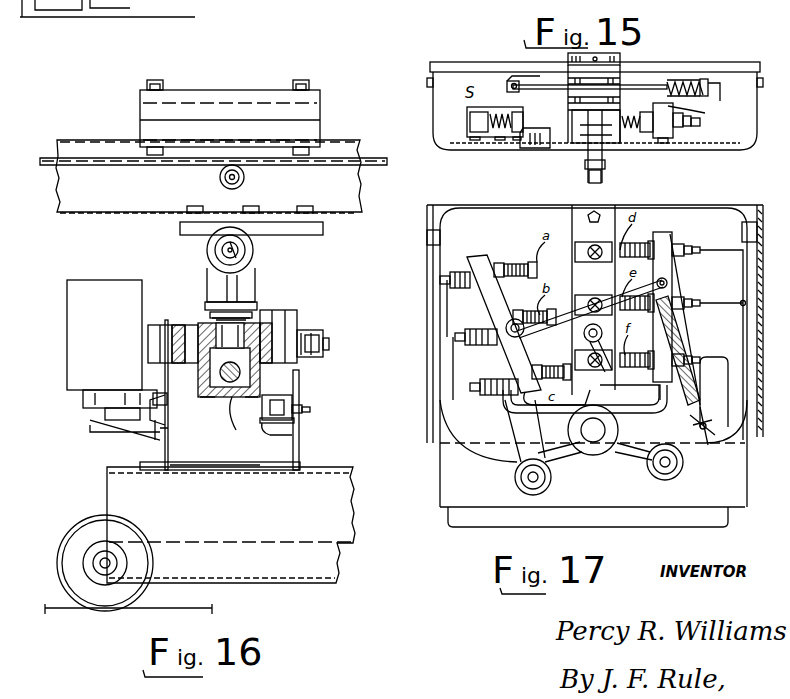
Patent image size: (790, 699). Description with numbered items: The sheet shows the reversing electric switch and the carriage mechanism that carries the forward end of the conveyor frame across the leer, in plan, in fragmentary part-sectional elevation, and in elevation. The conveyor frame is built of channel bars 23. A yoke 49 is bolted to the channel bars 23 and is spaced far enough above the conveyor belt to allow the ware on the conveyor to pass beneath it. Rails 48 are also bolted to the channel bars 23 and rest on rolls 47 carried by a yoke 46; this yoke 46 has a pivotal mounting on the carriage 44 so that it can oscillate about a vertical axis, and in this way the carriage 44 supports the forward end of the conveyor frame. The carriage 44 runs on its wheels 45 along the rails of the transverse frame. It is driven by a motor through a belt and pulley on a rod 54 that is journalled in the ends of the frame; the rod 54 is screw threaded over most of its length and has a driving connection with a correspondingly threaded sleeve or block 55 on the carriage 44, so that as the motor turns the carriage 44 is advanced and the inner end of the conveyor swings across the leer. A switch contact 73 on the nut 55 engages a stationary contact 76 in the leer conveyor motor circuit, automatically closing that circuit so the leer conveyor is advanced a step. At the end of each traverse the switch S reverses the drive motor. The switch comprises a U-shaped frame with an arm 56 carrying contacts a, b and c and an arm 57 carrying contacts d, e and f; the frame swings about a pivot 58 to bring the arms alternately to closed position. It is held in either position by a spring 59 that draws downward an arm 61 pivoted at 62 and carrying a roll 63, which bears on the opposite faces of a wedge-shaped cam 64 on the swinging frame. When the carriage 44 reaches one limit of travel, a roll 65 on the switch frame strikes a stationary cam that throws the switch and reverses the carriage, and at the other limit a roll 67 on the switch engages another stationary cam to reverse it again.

In FIG. 16, the channel bars 23 is at (336, 157).
In FIG. 16, the yoke 49 is at (247, 112).
In FIG. 16, the rails 48 is at (303, 232).
In FIG. 16, the rolls 47 is at (207, 247).
In FIG. 16, the yoke 46 is at (243, 283).
In FIG. 16, the carriage 44 is at (180, 323).
In FIG. 16, the wheels 45 is at (300, 332).
In FIG. 16, the rod 54 is at (217, 395).
In FIG. 16, the threaded sleeve or block 55 is at (234, 410).
In FIG. 16, the switch contact 73 is at (300, 410).
In FIG. 16, the stationary contact 76 is at (277, 427).
In FIG. 15, the arm 56 is at (475, 127).
In FIG. 17, the arm 56 is at (480, 262).
In FIG. 15, the arm 57 is at (667, 127).
In FIG. 17, the arm 57 is at (667, 233).
In FIG. 15, the pivot 58 is at (580, 137).
In FIG. 17, the pivot 58 is at (593, 433).
In FIG. 15, the spring 59 is at (683, 83).
In FIG. 17, the spring 59 is at (673, 340).
In FIG. 15, the arm 61 is at (633, 88).
In FIG. 17, the arm 61 is at (560, 303).
In FIG. 17, the pivot 62 is at (518, 338).
In FIG. 17, the roll 63 is at (605, 372).
In FIG. 17, the wedge-shaped cam 64 is at (577, 340).
In FIG. 15, the roll 65 is at (530, 147).
In FIG. 17, the roll 65 is at (513, 478).
In FIG. 15, the roll 67 is at (705, 113).
In FIG. 17, the roll 67 is at (668, 476).